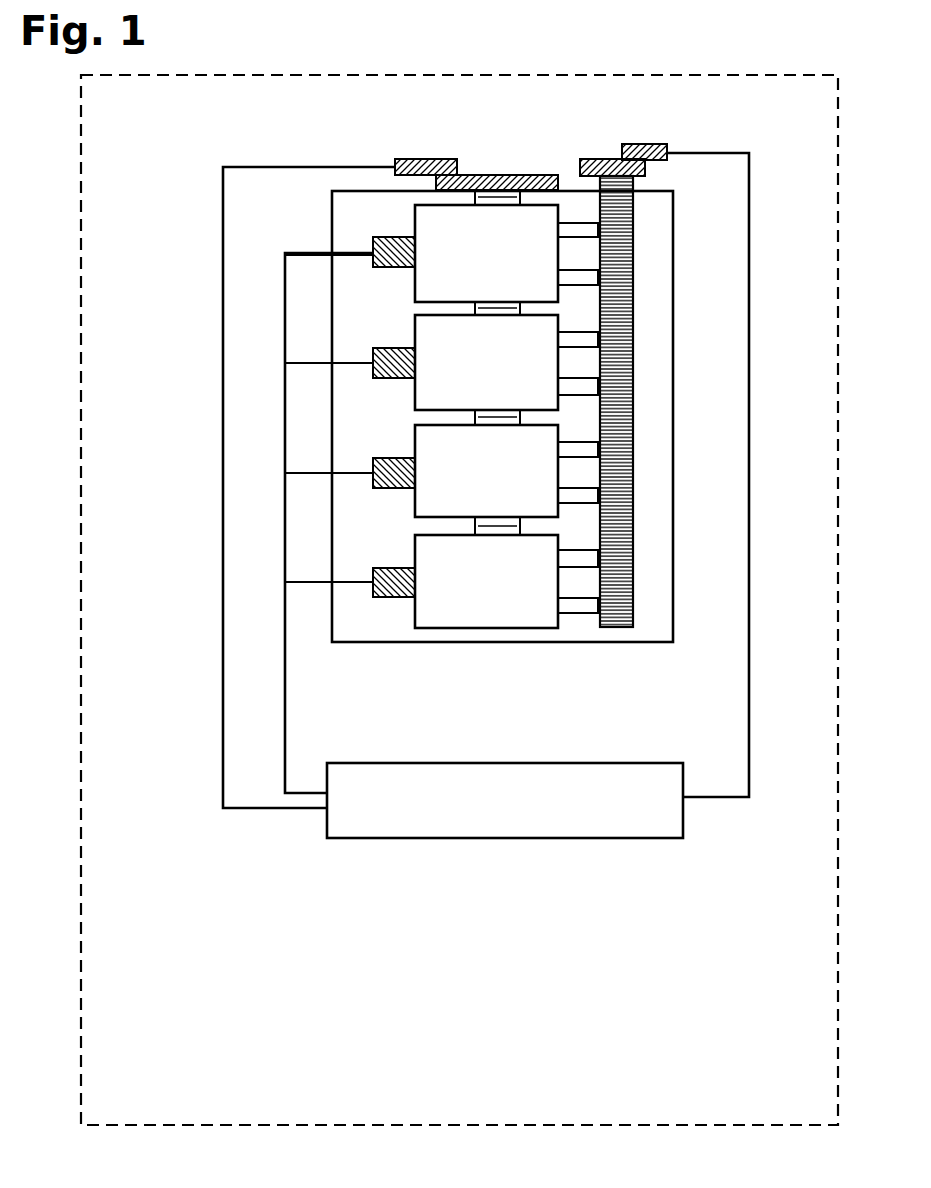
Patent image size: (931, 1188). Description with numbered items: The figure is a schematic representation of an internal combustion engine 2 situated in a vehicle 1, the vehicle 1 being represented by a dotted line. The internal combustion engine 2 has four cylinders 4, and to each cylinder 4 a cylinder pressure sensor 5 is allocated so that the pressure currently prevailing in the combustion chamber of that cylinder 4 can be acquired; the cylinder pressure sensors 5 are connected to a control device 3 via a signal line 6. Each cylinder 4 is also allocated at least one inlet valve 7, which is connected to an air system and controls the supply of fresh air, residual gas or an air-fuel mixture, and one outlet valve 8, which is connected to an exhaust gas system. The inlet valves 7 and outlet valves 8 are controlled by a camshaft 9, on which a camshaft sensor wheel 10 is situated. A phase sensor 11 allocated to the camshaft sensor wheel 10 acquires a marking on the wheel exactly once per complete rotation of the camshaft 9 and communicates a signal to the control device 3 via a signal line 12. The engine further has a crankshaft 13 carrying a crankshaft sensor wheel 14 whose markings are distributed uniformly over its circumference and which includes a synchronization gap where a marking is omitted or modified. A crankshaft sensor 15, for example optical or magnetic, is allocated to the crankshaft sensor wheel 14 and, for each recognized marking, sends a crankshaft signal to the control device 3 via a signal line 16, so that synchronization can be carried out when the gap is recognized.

The vehicle 1 is at (265, 73).
The internal combustion engine 2 is at (586, 645).
The control device 3 is at (341, 840).
The cylinder 4 is at (425, 222).
The cylinder pressure sensor 5 is at (372, 269).
The signal line 6 is at (287, 700).
The inlet valve 7 is at (592, 278).
The outlet valve 8 is at (592, 230).
The camshaft 9 is at (620, 523).
The camshaft sensor wheel 10 is at (595, 159).
The phase sensor 11 is at (650, 144).
The signal line 12 is at (748, 718).
The crankshaft 13 is at (483, 175).
The crankshaft sensor wheel 14 is at (540, 175).
The crankshaft sensor 15 is at (422, 159).
The signal line 16 is at (222, 762).